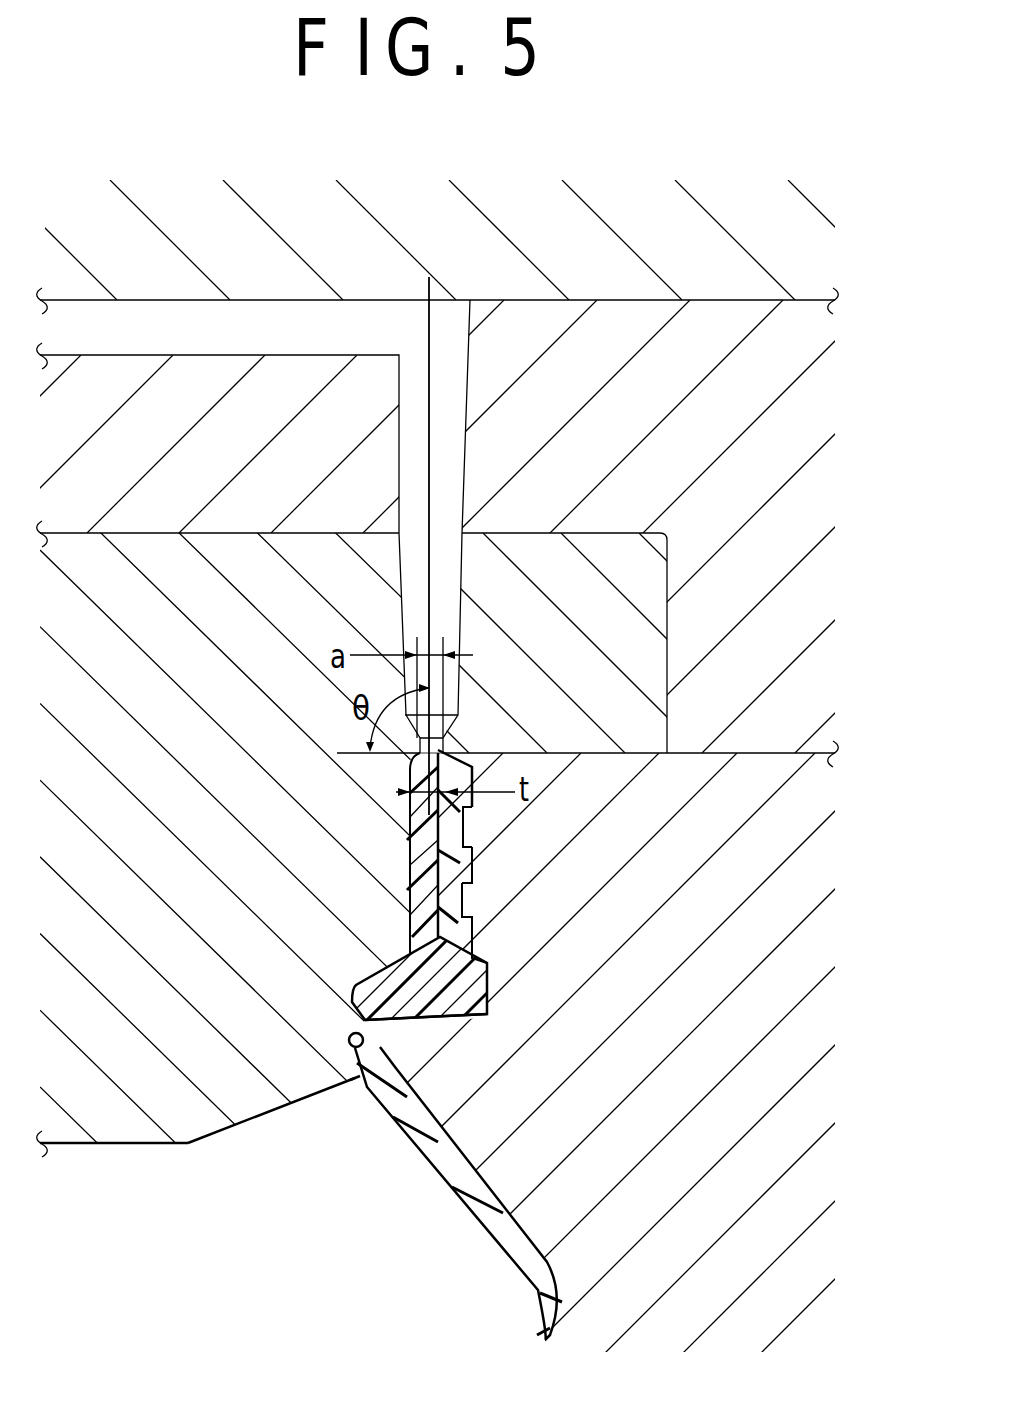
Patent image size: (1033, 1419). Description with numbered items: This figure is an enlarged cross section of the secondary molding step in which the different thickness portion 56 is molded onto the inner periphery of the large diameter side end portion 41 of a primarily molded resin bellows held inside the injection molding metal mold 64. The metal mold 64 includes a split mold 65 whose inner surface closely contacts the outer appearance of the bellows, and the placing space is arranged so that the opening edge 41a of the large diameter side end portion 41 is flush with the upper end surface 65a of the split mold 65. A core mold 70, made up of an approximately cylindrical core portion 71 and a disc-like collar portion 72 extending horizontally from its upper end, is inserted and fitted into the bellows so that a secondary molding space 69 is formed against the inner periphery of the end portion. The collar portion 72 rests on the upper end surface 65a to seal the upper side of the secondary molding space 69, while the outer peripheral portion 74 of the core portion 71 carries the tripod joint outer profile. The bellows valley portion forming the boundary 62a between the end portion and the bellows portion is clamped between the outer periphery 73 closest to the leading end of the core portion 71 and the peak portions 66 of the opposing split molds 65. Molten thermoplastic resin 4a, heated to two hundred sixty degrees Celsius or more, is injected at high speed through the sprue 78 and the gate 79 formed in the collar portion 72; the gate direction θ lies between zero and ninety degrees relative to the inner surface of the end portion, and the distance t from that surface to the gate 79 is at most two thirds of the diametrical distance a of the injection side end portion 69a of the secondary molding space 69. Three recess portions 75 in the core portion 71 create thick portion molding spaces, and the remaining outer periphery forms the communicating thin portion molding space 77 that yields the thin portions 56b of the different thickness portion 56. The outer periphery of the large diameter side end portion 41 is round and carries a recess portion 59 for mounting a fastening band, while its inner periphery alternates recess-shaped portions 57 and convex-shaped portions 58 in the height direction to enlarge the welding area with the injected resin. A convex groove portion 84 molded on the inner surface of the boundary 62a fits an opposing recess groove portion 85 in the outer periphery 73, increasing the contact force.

The sprue 78 is at (468, 405).
The collar portion 72 is at (670, 542).
The split mold 65 is at (685, 753).
The upper end surface of the split mold 65a is at (667, 685).
The injection molding metal mold 64 is at (732, 753).
The gate 79 is at (450, 750).
The injection side end portion of the secondary molding space 69a is at (448, 752).
The secondary molding space 69 is at (400, 990).
The opening edge of the large diameter side end portion 41a is at (478, 752).
The large diameter side end portion 41 is at (565, 927).
The recess portion 59 is at (473, 812).
The convex-shaped portion 58 is at (470, 868).
The recess-shaped portion 57 is at (500, 912).
The different thickness portion 56 is at (396, 782).
The thin portion 56b is at (415, 850).
The thin portion molding space 77 is at (415, 883).
The outer peripheral portion 74 is at (412, 920).
The recess portion 75 is at (398, 943).
The thermoplastic resin 4a is at (385, 980).
The boundary 62a is at (382, 1047).
The recess groove portion 85 is at (349, 1042).
The convex groove portion 84 is at (402, 1075).
The outer periphery closest to the leading end side of the core portion 73 is at (348, 1085).
The peak portions 66 is at (366, 1088).
The core mold 70 is at (92, 1146).
The core portion 71 is at (165, 1146).